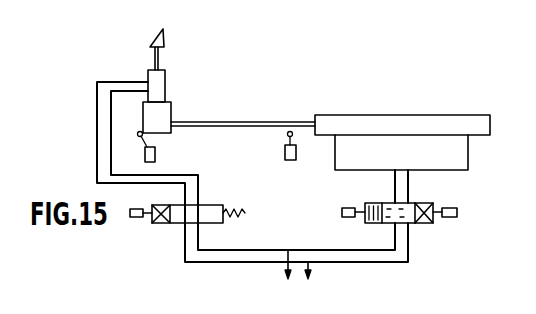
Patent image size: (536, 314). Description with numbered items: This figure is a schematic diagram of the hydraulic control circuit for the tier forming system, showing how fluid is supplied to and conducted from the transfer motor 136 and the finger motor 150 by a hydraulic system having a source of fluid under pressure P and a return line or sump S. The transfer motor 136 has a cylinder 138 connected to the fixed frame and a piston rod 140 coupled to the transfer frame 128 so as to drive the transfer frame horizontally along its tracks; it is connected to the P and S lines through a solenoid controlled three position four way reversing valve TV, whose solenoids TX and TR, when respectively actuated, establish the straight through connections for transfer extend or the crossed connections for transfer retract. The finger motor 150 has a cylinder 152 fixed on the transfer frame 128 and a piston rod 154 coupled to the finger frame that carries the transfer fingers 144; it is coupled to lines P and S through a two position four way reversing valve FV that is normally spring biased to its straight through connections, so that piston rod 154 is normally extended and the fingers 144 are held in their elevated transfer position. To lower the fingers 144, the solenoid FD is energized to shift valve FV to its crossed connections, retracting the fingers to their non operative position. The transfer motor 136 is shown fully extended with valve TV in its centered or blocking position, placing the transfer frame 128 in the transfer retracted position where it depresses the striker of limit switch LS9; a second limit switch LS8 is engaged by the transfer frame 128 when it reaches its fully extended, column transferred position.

The transfer frame assembly 128 is at (172, 112).
The hydraulic motor 136 is at (357, 118).
The cylinder 138 is at (437, 121).
The piston rod 140 is at (265, 121).
The transfer fingers 144 is at (166, 33).
The hydraulic motor 150 is at (153, 93).
The cylinder 152 is at (166, 76).
The piston rod 154 is at (154, 57).
The limit switch LS8 is at (290, 160).
The limit switch LS9 is at (155, 158).
The two position four way reversing valve FV is at (178, 226).
The solenoid FD is at (136, 217).
The three position four way reversing valve TV is at (413, 225).
The solenoid TX is at (348, 217).
The solenoid TR is at (450, 217).
The source of fluid under pressure P is at (286, 277).
The sump S is at (310, 283).